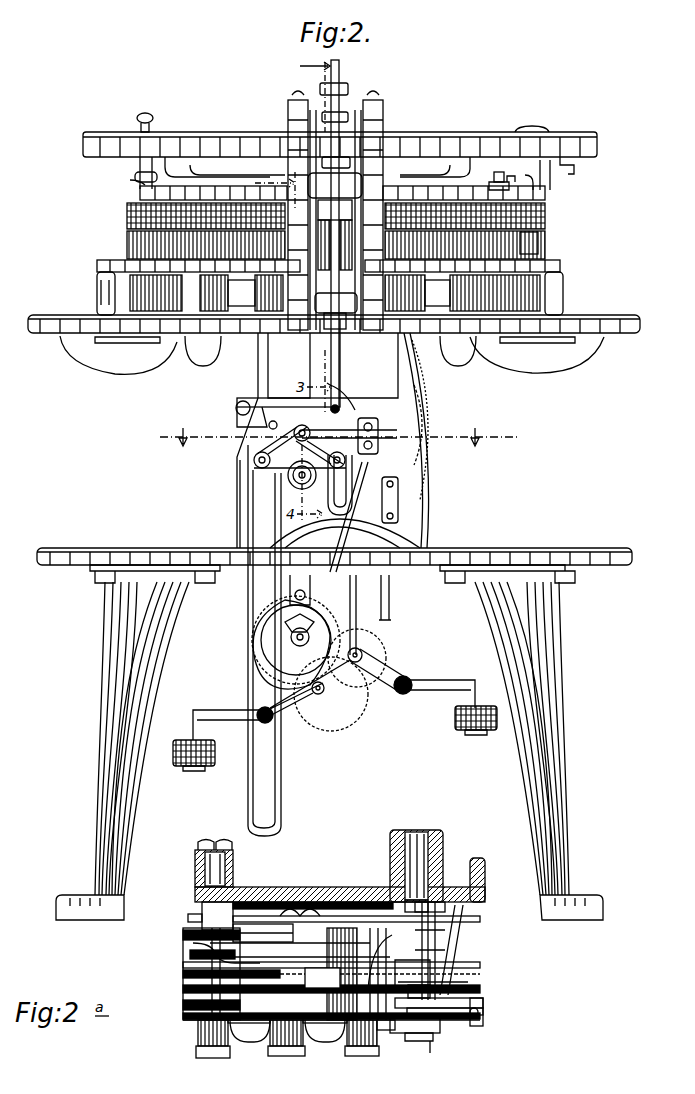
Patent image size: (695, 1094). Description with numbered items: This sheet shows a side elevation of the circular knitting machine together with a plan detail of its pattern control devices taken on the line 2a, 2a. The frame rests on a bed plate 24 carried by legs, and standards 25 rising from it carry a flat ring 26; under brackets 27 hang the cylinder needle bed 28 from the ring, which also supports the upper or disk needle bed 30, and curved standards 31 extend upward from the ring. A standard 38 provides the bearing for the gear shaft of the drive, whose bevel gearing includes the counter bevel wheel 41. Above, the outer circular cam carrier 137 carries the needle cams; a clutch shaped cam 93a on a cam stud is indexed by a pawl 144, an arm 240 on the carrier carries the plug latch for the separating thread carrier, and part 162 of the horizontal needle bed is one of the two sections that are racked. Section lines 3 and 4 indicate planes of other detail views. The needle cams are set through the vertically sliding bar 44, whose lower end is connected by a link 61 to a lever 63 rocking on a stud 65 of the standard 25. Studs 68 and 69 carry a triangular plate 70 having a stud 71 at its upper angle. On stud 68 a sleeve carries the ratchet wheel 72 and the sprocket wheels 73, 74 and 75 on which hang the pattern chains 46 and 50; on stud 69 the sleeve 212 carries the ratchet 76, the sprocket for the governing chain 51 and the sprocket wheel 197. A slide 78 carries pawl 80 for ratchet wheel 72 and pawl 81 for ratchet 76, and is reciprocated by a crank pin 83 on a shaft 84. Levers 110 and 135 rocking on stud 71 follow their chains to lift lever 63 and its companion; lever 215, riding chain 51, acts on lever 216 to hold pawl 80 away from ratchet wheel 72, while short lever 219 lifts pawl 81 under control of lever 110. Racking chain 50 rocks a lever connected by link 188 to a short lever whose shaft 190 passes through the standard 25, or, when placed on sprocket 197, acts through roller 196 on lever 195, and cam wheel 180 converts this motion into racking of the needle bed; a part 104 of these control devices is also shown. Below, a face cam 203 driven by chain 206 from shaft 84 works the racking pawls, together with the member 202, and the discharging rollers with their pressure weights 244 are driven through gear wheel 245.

In FIG. 2, the standard 38 is at (445, 142).
In FIG. 2, the arm 240 is at (530, 128).
In FIG. 2, the needle bed part 162 is at (552, 188).
In FIG. 2, the clutch shaped cam 93a is at (497, 174).
In FIG. 2, the pawl 144 is at (512, 178).
In FIG. 2, the section line 3- 3 is at (306, 94).
In FIG. 2, the section line 4- 4 is at (269, 190).
In FIG. 2, the standards 31 is at (383, 108).
In FIG. 2, the vertically sliding bar 44 is at (335, 82).
In FIG. 2, the upper or disk needle bed 30 is at (127, 208).
In FIG. 2, the cylinder needle bed 28 is at (127, 240).
In FIG. 2, the outer circular cam carrier 137 is at (135, 190).
In FIG. 2, the flat ring 26 is at (642, 325).
In FIG. 2, the under brackets 27 is at (122, 366).
In FIG. 2, the standards 25 is at (428, 528).
In FIG. 2A, the standards 25 is at (258, 887).
In FIG. 2, the lever 63 is at (245, 398).
In FIG. 2, the stud 65 is at (238, 409).
In FIG. 2, the link 61 is at (345, 393).
In FIG. 2, the stud 71 is at (365, 418).
In FIG. 2A, the stud 71 is at (290, 1056).
In FIG. 2, the stud 68 is at (254, 462).
In FIG. 2A, the stud 68 is at (214, 1058).
In FIG. 2, the triangular plate 70 is at (288, 470).
In FIG. 2A, the triangular plate 70 is at (258, 1042).
In FIG. 2, the stud 69 is at (330, 495).
In FIG. 2A, the stud 69 is at (360, 1056).
In FIG. 2, the governing chain 51 is at (310, 528).
In FIG. 2A, the governing chain 51 is at (430, 985).
In FIG. 2, the section line 2a is at (333, 430).
In FIG. 2, the pattern chain 50 is at (248, 535).
In FIG. 2A, the pattern chain 50 is at (183, 1020).
In FIG. 2, the bed plate 24 is at (334, 557).
In FIG. 2, the pivot 202 is at (293, 592).
In FIG. 2, the face cam 203 is at (262, 648).
In FIG. 2, the gear wheel 245 is at (355, 703).
In FIG. 2, the pressure weights 244 is at (195, 768).
In FIG. 2, the chain 206 is at (385, 568).
In FIG. 2A, the slide 78 is at (322, 905).
In FIG. 2A, the pawl 80 is at (260, 942).
In FIG. 2A, the shaft 84 is at (424, 832).
In FIG. 2A, the pawl 81 is at (342, 890).
In FIG. 2A, the ratchet wheel 72 is at (183, 932).
In FIG. 2A, the lever 216 is at (240, 922).
In FIG. 2A, the lever 215 is at (240, 944).
In FIG. 2A, the sprocket wheel 74 is at (195, 944).
In FIG. 2A, the counter bevel wheel 41 is at (183, 963).
In FIG. 2A, the lever 135 is at (183, 973).
In FIG. 2A, the sprocket wheel 73 is at (183, 988).
In FIG. 2A, the pattern chain 46 is at (183, 996).
In FIG. 2A, the lever 110 is at (183, 1012).
In FIG. 2A, the sprocket wheel 75 is at (183, 1022).
In FIG. 2A, the sleeve 212 is at (348, 974).
In FIG. 2A, the roller 196 is at (342, 1020).
In FIG. 2A, the link 188 is at (387, 1030).
In FIG. 2A, the crank pin 83 is at (450, 922).
In FIG. 2A, the short lever 219 is at (460, 936).
In FIG. 2A, the ratchet wheel 76 is at (430, 966).
In FIG. 2A, the sprocket wheel 197 is at (446, 983).
In FIG. 2A, the lever 195 is at (475, 992).
In FIG. 2A, the rod 104 is at (483, 1012).
In FIG. 2A, the cam wheel 180 is at (440, 1030).
In FIG. 2A, the shaft 190 is at (430, 1053).